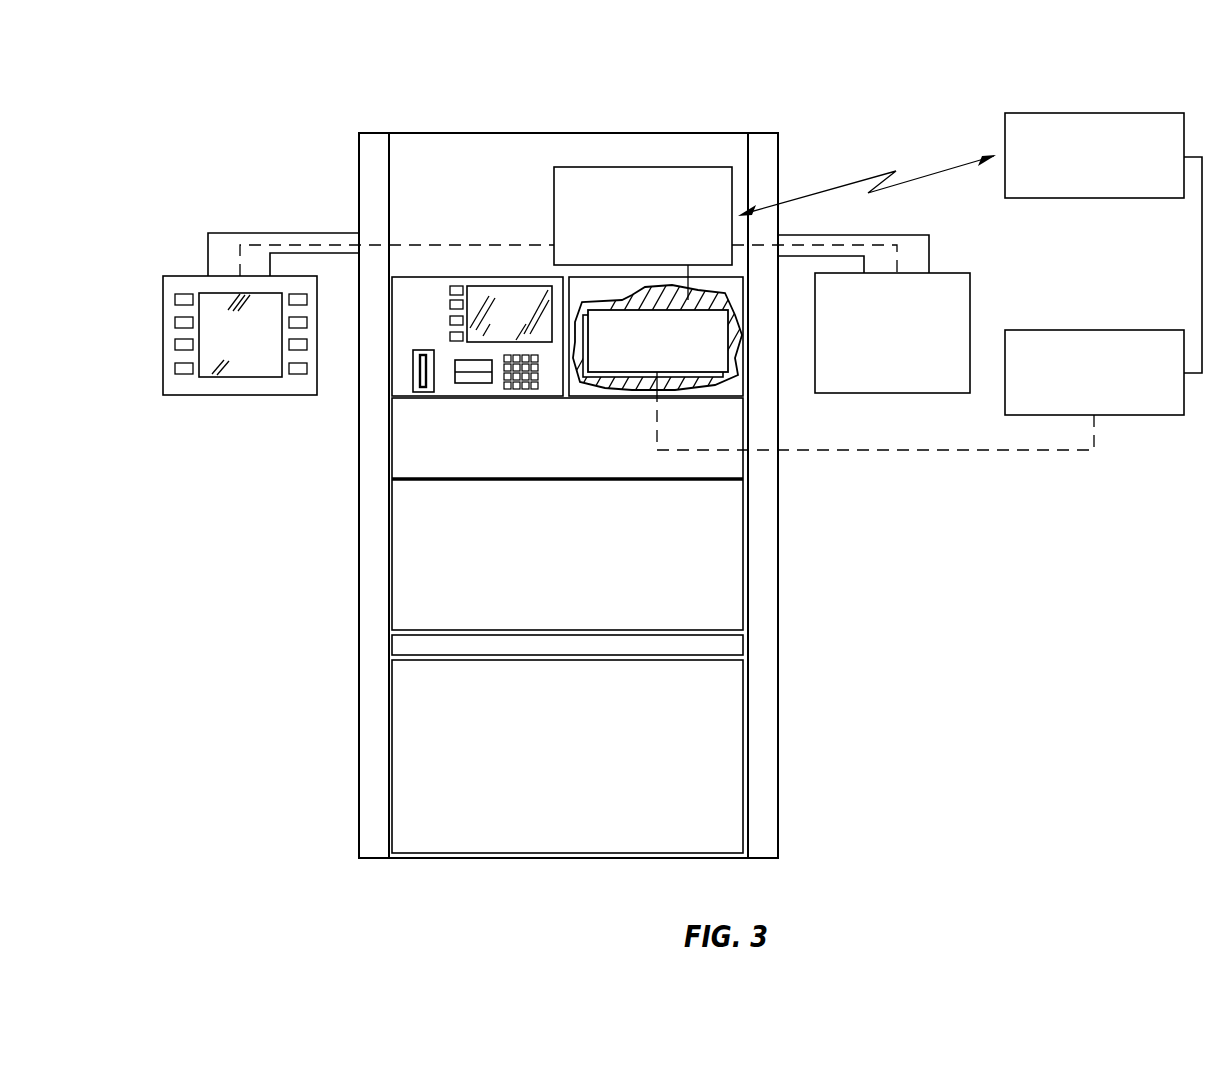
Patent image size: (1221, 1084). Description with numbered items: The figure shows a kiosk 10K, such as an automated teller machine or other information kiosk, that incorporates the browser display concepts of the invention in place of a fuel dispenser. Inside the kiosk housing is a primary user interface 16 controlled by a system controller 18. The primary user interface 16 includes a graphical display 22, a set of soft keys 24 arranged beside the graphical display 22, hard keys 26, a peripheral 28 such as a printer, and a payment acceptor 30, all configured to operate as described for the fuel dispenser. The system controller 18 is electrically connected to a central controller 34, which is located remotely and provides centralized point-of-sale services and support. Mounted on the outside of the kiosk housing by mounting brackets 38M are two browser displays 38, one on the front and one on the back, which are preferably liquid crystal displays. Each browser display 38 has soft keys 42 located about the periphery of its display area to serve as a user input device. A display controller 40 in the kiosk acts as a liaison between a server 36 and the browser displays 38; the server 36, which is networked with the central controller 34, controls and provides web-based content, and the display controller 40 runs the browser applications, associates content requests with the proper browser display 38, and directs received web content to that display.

The kiosk 10K is at (730, 76).
The primary user interface 16 is at (426, 302).
The soft keys 24 is at (447, 286).
The graphical display 22 is at (519, 321).
The payment acceptor 30 is at (416, 391).
The peripheral 28 is at (458, 386).
The hard keys 26 is at (507, 389).
The system controller 18 is at (668, 367).
The display controller 40 is at (657, 252).
The server 36 is at (970, 243).
The central controller 34 is at (1106, 407).
The mounting brackets 38M is at (233, 233).
The browser displays 38 is at (193, 275).
The soft keys 42 is at (181, 344).